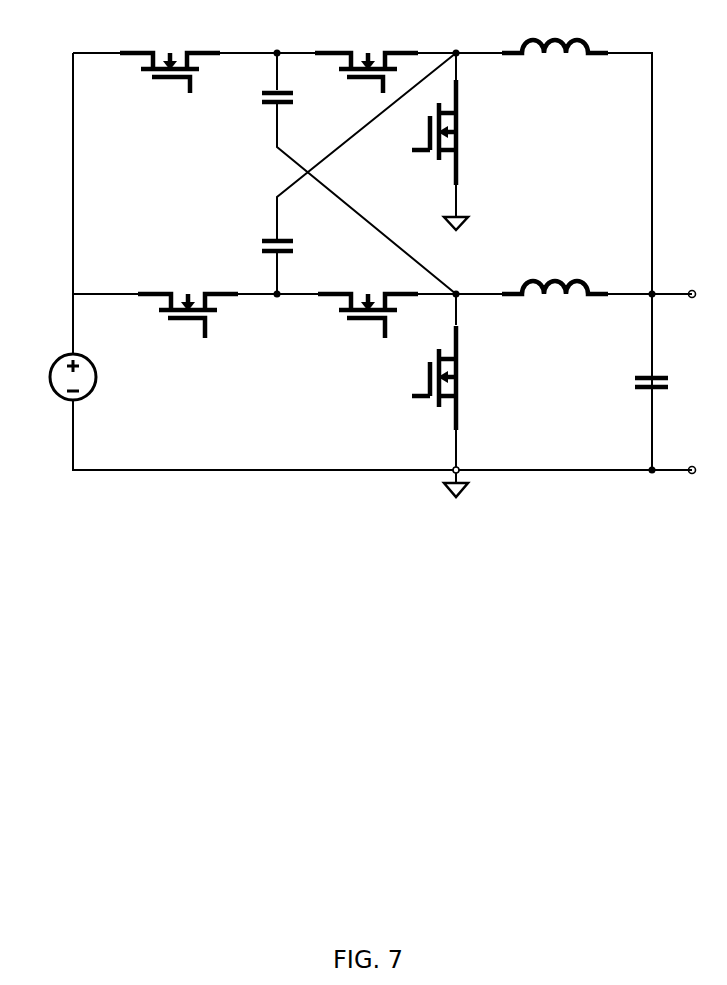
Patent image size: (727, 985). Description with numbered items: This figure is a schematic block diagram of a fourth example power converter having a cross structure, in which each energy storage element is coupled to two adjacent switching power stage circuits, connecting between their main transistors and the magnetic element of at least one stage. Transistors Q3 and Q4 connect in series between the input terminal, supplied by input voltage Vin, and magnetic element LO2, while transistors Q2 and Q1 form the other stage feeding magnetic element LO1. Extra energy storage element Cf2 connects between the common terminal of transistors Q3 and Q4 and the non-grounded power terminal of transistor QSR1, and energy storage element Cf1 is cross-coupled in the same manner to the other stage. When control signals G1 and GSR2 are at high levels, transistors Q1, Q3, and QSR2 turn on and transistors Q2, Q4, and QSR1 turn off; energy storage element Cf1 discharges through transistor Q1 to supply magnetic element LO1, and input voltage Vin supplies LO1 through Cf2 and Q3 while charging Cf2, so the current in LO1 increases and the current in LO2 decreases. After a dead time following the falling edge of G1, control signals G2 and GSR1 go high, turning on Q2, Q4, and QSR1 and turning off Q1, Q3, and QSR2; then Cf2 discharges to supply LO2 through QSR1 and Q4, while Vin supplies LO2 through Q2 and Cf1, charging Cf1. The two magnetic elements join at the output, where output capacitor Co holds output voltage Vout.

The transistor Q3 is at (170, 46).
The transistor Q4 is at (366, 45).
The transistor Q2 is at (188, 287).
The transistor Q1 is at (368, 287).
The control signal G1 is at (272, 223).
The control signal G2 is at (275, 223).
The energy storage element Cf2 is at (261, 105).
The energy storage element Cf1 is at (259, 250).
The transistor QSR2 is at (473, 132).
The control signal GSR2 is at (395, 137).
The transistor QSR1 is at (473, 378).
The control signal GSR1 is at (395, 385).
The magnetic element LO2 is at (555, 32).
The magnetic element LO1 is at (555, 275).
The output capacitor Co is at (634, 386).
The input voltage Vin is at (55, 377).
The output voltage Vout is at (696, 388).